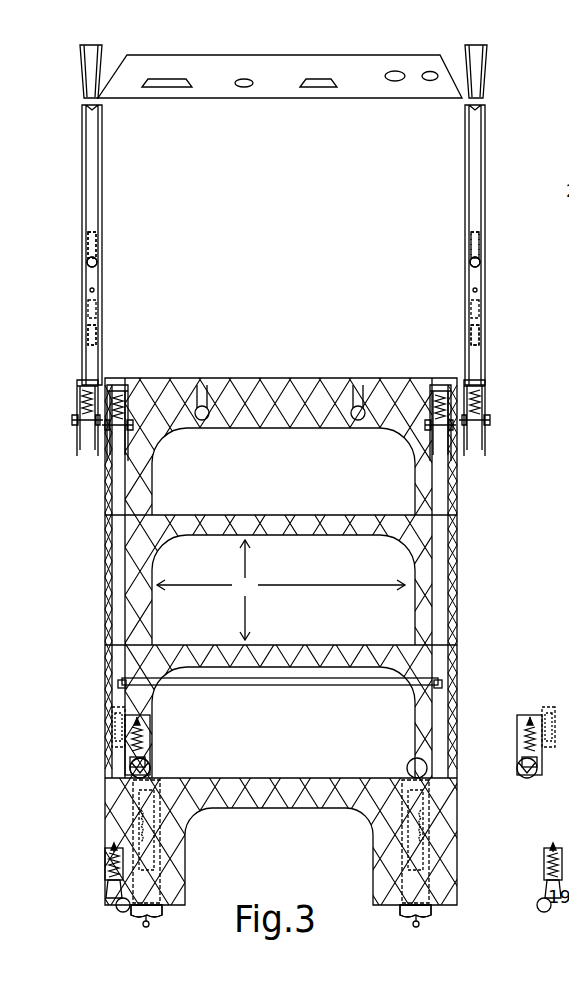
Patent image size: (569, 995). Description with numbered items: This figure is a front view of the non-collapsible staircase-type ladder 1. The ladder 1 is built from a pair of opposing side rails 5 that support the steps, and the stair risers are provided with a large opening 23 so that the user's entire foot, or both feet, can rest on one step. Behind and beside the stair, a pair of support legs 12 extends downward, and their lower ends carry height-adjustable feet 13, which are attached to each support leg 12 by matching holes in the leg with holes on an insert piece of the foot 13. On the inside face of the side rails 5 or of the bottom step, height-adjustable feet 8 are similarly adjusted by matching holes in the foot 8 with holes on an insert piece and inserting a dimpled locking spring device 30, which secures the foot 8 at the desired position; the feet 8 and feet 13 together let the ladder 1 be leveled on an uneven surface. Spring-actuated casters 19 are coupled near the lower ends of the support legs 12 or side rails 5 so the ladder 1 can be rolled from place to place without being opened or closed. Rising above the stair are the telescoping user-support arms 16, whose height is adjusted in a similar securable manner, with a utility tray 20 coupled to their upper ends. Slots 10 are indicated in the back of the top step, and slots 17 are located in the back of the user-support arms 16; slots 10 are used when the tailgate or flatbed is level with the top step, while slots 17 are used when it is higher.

The ladder 1 is at (283, 385).
The side rails 5 is at (457, 592).
The height-adjustable feet 8 is at (281, 925).
The slots 10 is at (202, 386).
The support legs 12 is at (118, 478).
The height-adjustable feet 13 is at (118, 735).
The telescoping user-support arms 16 is at (92, 283).
The slots 17 is at (97, 250).
The spring-actuated casters 19 is at (150, 758).
The utility tray 20 is at (272, 83).
The opening 23 is at (281, 590).
The dimpled locking spring device 30 is at (97, 335).